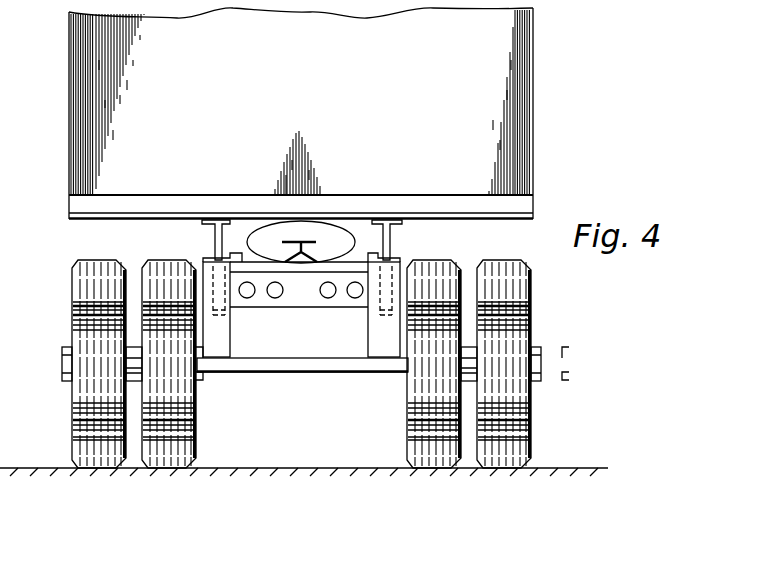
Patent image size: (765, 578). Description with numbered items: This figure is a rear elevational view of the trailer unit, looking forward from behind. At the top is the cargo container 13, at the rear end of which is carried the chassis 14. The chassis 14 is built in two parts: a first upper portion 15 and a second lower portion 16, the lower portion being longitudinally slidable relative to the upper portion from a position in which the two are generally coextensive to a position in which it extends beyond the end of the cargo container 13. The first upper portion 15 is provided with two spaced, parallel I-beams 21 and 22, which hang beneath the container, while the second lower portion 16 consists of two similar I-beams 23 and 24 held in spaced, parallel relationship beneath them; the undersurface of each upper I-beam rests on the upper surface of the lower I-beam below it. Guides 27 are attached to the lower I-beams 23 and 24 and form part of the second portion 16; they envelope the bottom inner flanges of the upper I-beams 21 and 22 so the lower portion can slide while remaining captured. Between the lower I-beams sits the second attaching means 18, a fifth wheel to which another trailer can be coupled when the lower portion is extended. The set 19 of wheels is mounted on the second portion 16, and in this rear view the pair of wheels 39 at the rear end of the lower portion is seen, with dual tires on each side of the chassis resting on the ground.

The cargo container 13 is at (513, 137).
The chassis 14 is at (312, 372).
The first upper portion 15 is at (393, 228).
The second lower portion 16 is at (376, 300).
The second attaching means 18 is at (301, 241).
The set of wheels 19 is at (170, 455).
The I-beam 21 is at (215, 242).
The I-beam 22 is at (393, 248).
The I-beam 23 is at (226, 310).
The I-beam 24 is at (346, 310).
The guides 27 is at (232, 258).
The rear pair of wheels 39 is at (407, 437).